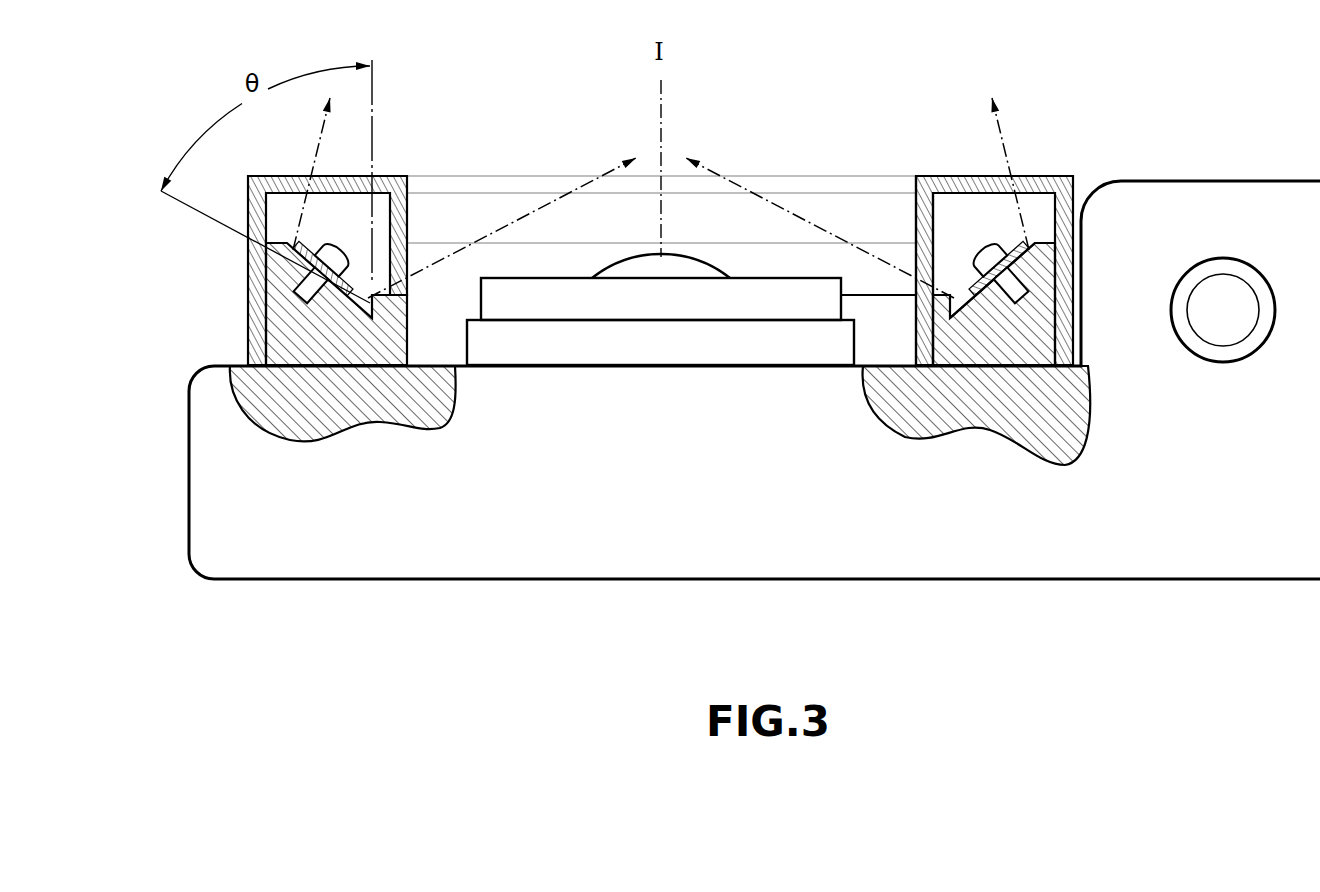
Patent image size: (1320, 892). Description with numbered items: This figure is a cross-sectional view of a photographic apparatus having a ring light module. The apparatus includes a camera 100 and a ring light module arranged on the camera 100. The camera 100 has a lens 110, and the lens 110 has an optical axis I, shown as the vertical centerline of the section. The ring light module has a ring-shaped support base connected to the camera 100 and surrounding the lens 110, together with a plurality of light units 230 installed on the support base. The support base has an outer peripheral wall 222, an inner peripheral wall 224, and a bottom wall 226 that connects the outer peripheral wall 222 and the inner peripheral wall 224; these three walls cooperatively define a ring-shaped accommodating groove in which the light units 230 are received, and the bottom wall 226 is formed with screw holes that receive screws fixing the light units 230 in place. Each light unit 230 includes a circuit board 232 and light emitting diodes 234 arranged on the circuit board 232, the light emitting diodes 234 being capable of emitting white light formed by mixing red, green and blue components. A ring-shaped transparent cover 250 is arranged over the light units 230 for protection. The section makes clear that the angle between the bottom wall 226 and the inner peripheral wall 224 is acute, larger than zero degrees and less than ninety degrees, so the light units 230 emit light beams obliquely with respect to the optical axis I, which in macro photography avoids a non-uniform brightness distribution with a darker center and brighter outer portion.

The camera 100 is at (1057, 540).
The lens 110 is at (542, 302).
The outer peripheral wall 222 is at (1042, 242).
The inner peripheral wall 224 is at (917, 305).
The bottom wall 226 is at (938, 317).
The light unit 230 is at (1027, 252).
The circuit board 232 is at (1037, 258).
The light emitting diode 234 is at (963, 300).
The transparent cover 250 is at (1047, 176).